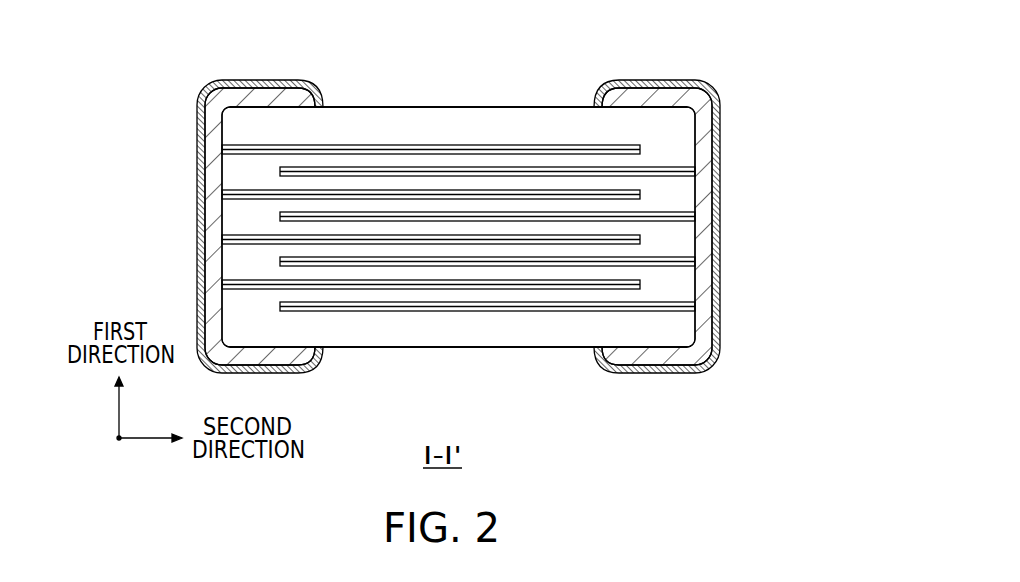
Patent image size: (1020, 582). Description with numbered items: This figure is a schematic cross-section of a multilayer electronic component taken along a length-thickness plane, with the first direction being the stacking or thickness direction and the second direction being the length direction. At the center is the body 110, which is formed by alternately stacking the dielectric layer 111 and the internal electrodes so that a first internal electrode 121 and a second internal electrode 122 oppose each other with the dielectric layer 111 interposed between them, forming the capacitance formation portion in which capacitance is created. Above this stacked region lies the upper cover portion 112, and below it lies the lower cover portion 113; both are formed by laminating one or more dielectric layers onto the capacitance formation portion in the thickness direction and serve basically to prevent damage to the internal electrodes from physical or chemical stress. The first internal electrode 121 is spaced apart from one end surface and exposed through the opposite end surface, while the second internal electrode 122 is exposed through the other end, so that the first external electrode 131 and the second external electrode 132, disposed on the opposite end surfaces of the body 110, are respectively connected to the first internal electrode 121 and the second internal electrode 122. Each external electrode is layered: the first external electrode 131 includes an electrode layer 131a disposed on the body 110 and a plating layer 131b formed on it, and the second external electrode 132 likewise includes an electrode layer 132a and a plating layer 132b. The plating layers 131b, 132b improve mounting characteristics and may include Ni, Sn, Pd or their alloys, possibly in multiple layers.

The body 110 is at (392, 107).
The dielectric layer 111 is at (343, 158).
The upper cover portion 112 is at (465, 120).
The lower cover portion 113 is at (373, 333).
The first internal electrode 121 is at (530, 153).
The second internal electrode 122 is at (585, 168).
The first external electrode 131 is at (185, 226).
The electrode layer 131a is at (217, 158).
The plating layer 131b is at (200, 183).
The second external electrode 132 is at (734, 226).
The electrode layer 132a is at (705, 135).
The plating layer 132b is at (716, 160).